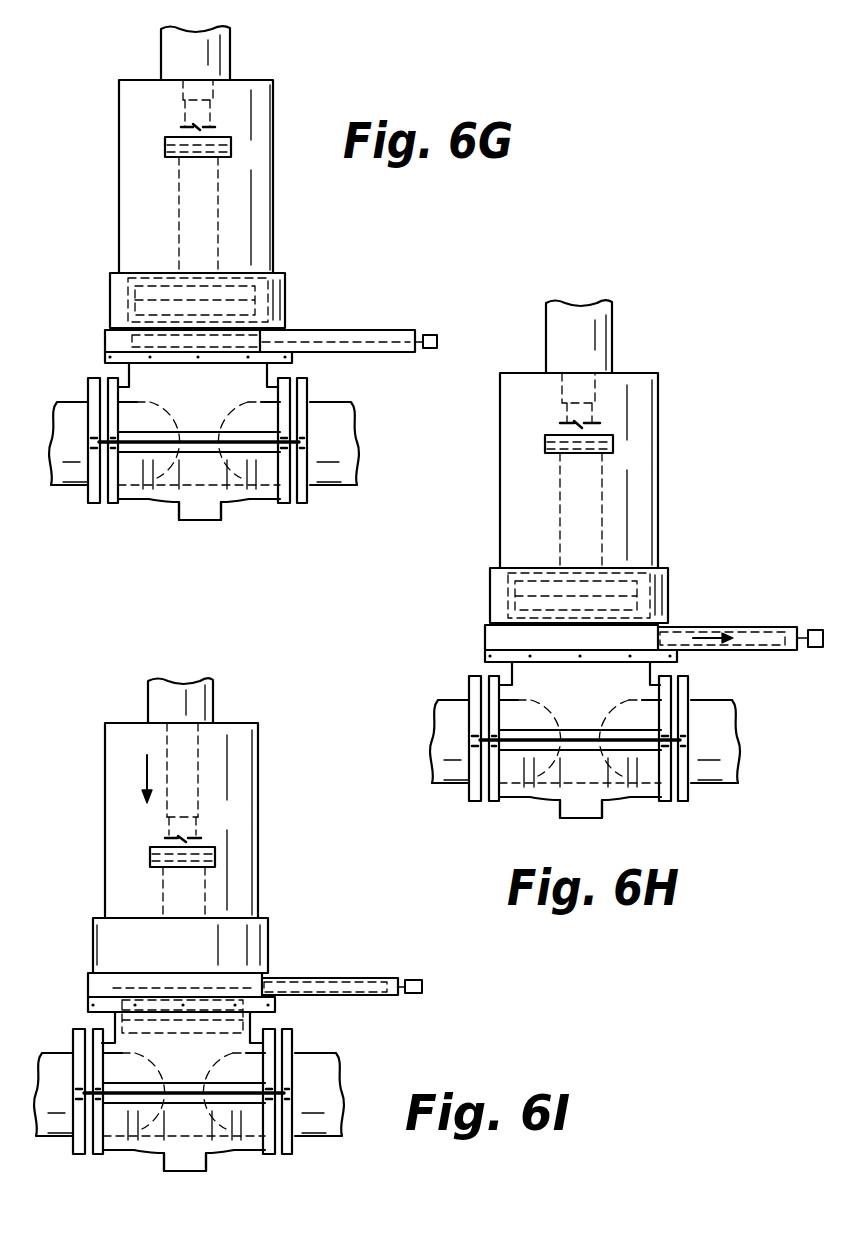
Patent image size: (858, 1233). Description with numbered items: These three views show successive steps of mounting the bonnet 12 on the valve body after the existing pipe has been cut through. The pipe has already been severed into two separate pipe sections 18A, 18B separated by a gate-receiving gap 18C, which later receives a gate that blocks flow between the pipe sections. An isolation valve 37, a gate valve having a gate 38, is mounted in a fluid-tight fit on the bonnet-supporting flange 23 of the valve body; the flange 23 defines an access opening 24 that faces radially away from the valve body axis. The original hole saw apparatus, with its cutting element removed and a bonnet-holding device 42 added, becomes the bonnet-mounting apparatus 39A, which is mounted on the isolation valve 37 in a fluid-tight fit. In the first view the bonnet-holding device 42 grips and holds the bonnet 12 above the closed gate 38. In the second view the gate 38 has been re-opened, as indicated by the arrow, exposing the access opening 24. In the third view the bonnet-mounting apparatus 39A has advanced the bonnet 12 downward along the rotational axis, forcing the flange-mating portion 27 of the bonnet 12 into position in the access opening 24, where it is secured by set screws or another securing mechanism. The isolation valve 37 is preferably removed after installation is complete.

In FIG. 6G, the bonnet-mounting apparatus 39A is at (230, 44).
In FIG. 6H, the bonnet-mounting apparatus 39A is at (546, 302).
In FIG. 6I, the bonnet-mounting apparatus 39A is at (148, 680).
In FIG. 6G, the bonnet-holding device 42 is at (182, 99).
In FIG. 6H, the bonnet-holding device 42 is at (561, 393).
In FIG. 6I, the bonnet-holding device 42 is at (167, 818).
In FIG. 6G, the bonnet 12 is at (165, 137).
In FIG. 6H, the bonnet 12 is at (545, 439).
In FIG. 6I, the bonnet 12 is at (150, 850).
In FIG. 6G, the flange-mating portion 27 is at (137, 297).
In FIG. 6H, the flange-mating portion 27 is at (520, 592).
In FIG. 6I, the flange-mating portion 27 is at (120, 1017).
In FIG. 6G, the gate 38 is at (138, 333).
In FIG. 6H, the gate 38 is at (745, 651).
In FIG. 6I, the gate 38 is at (362, 996).
In FIG. 6G, the isolation valve 37 is at (375, 331).
In FIG. 6H, the isolation valve 37 is at (755, 626).
In FIG. 6I, the isolation valve 37 is at (356, 977).
In FIG. 6H, the bonnet-supporting flange 23 is at (485, 655).
In FIG. 6I, the bonnet-supporting flange 23 is at (88, 1007).
In FIG. 6H, the access opening 24 is at (530, 650).
In FIG. 6G, the pipe section 18A is at (81, 467).
In FIG. 6H, the pipe section 18A is at (462, 765).
In FIG. 6I, the pipe section 18A is at (66, 1118).
In FIG. 6G, the pipe section 18B is at (355, 467).
In FIG. 6H, the pipe section 18B is at (736, 765).
In FIG. 6I, the pipe section 18B is at (340, 1118).
In FIG. 6G, the gate-receiving gap 18C is at (224, 516).
In FIG. 6H, the gate-receiving gap 18C is at (605, 814).
In FIG. 6I, the gate-receiving gap 18C is at (209, 1167).